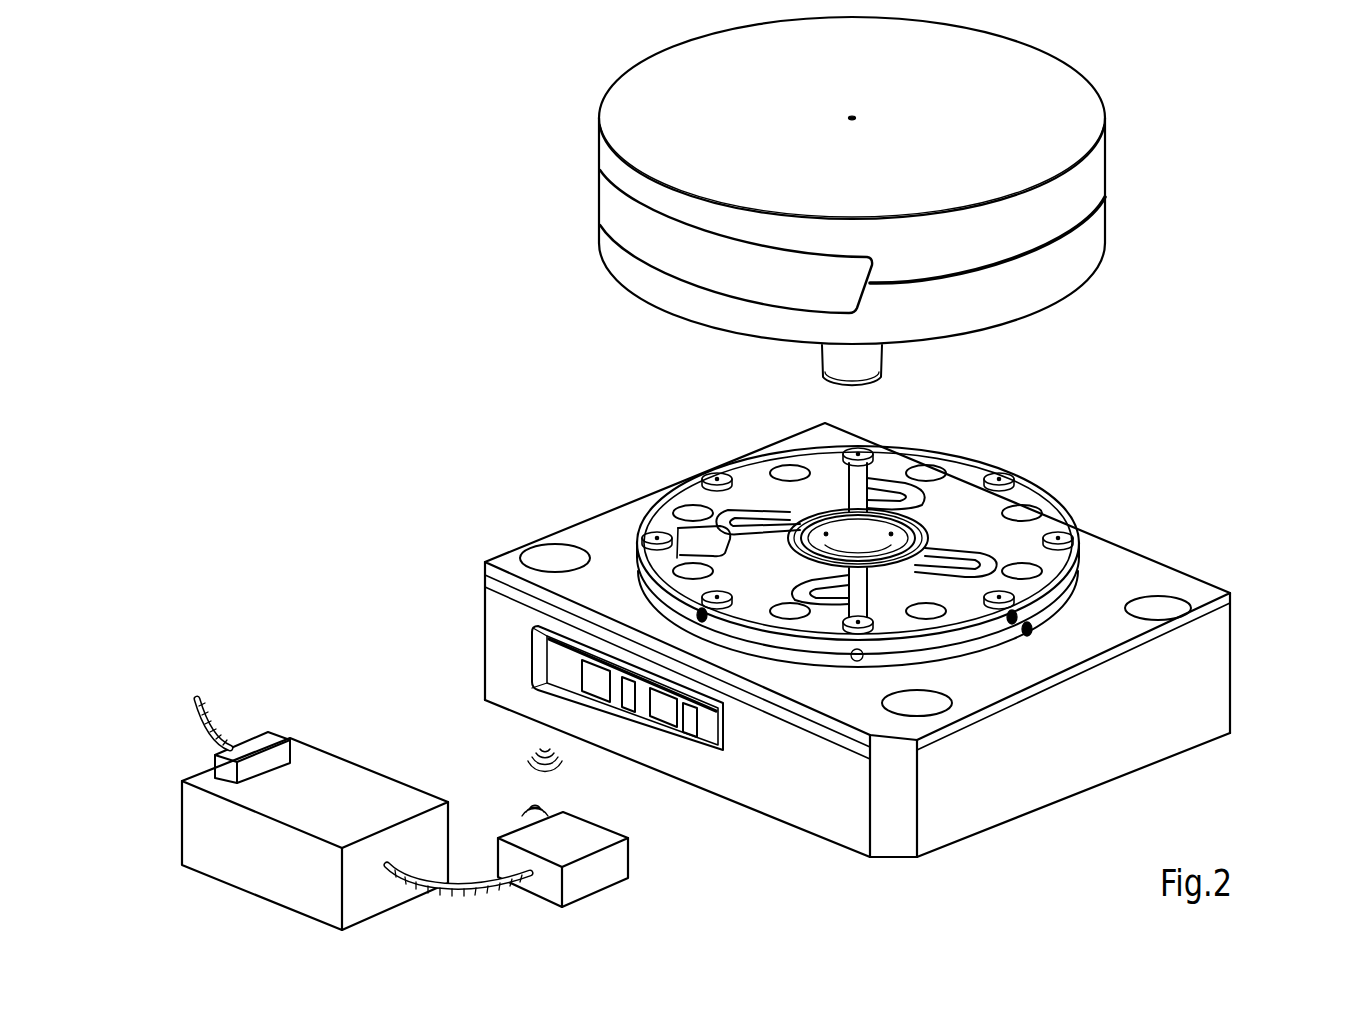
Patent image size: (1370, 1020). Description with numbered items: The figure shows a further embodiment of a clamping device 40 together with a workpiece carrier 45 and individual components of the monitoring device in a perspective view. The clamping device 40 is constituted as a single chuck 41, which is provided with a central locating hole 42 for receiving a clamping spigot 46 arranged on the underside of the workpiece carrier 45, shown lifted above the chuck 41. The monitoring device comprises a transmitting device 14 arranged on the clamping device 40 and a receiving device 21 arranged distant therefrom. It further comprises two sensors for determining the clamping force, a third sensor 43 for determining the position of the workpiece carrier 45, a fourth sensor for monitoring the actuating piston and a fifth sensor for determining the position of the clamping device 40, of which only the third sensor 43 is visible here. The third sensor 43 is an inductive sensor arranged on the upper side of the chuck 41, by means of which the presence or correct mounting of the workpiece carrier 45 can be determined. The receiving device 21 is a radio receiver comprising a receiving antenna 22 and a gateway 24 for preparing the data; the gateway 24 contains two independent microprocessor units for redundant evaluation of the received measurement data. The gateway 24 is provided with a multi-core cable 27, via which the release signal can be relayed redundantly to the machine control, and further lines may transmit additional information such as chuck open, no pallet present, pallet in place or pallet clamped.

The transmitting device 14 is at (517, 655).
The receiving device 21 is at (455, 753).
The receiving antenna 22 is at (593, 873).
The gateway 24 is at (320, 773).
The multi-core cable 27 is at (199, 700).
The clamping device 40 is at (1243, 667).
The chuck 41 is at (1027, 500).
The central locating hole 42 is at (849, 549).
The third sensor 43 is at (710, 543).
The workpiece carrier 45 is at (623, 216).
The clamping spigot 46 is at (828, 357).